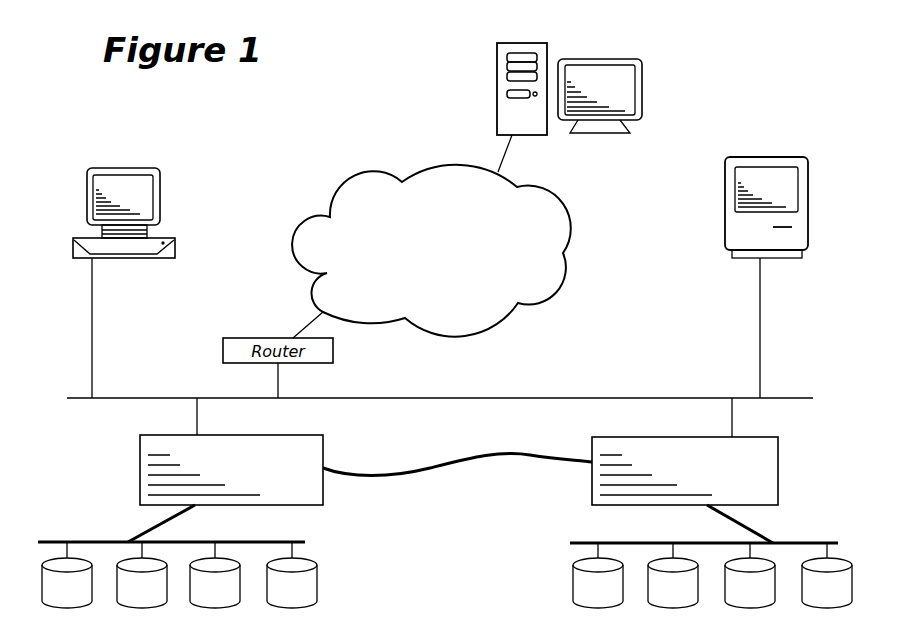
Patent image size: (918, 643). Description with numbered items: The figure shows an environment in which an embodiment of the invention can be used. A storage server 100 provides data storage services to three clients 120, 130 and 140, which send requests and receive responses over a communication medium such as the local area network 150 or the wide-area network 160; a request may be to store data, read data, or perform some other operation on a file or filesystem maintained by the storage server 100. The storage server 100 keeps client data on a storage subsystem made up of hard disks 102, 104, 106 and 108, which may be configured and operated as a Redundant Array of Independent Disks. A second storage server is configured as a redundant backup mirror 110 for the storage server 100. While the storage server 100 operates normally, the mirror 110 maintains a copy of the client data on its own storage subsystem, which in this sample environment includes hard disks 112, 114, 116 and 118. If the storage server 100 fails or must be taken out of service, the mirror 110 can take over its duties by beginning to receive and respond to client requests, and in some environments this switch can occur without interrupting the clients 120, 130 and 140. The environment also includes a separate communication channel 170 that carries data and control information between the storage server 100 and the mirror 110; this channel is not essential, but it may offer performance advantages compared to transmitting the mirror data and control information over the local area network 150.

The storage server 100 is at (225, 470).
The hard disk 102 is at (67, 575).
The hard disk 104 is at (142, 575).
The hard disk 106 is at (215, 575).
The hard disk 108 is at (292, 575).
The mirror 110 is at (685, 470).
The hard disk 112 is at (598, 575).
The hard disk 114 is at (673, 575).
The hard disk 116 is at (750, 575).
The hard disk 118 is at (827, 575).
The client 120 is at (116, 283).
The client 130 is at (569, 99).
The client 140 is at (766, 277).
The local area network 150 is at (440, 408).
The wide-area network 160 is at (431, 236).
The separate communication channel 170 is at (457, 464).